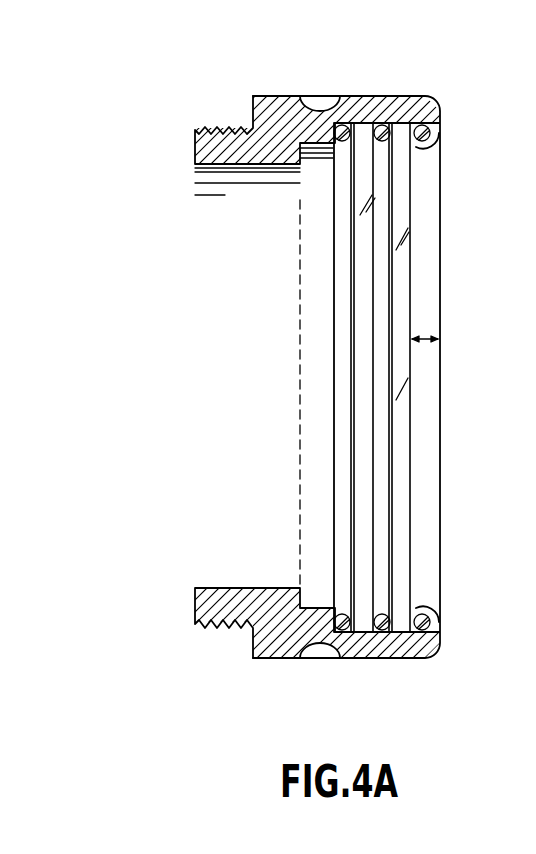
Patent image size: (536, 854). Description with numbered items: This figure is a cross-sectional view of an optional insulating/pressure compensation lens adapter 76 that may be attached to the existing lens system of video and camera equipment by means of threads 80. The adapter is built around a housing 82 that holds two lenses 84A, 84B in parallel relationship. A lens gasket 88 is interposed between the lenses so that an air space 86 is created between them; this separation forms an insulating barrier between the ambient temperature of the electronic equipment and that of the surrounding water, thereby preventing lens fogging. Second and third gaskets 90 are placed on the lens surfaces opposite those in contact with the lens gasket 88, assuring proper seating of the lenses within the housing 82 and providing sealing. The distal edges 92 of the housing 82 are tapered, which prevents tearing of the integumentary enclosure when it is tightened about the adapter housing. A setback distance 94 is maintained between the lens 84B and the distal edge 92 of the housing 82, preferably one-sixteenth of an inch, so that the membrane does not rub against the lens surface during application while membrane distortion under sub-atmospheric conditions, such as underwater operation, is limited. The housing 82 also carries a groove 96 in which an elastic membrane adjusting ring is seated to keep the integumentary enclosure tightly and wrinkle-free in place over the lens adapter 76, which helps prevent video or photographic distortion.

The lens adapter 76 is at (276, 90).
The threads 80 is at (232, 126).
The housing 82 is at (262, 150).
The lens 84A is at (355, 277).
The lens 84B is at (408, 277).
The air space 86 is at (398, 427).
The lens gasket 88 is at (384, 122).
The gaskets 90 is at (343, 122).
The distal edges 92 is at (440, 136).
The setback distance 94 is at (427, 338).
The groove 96 is at (330, 98).